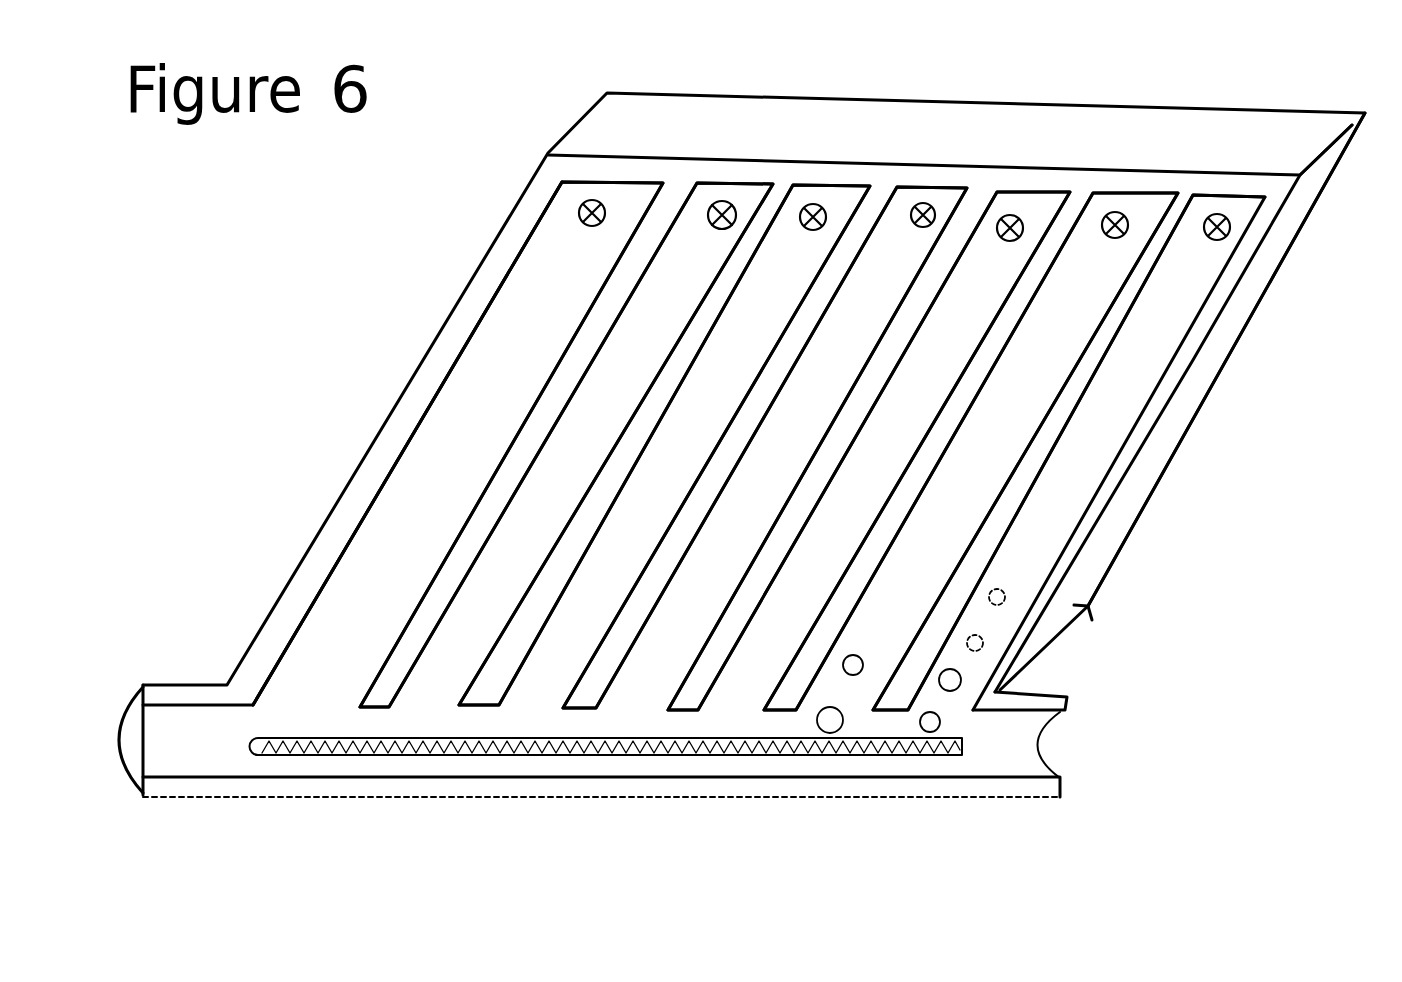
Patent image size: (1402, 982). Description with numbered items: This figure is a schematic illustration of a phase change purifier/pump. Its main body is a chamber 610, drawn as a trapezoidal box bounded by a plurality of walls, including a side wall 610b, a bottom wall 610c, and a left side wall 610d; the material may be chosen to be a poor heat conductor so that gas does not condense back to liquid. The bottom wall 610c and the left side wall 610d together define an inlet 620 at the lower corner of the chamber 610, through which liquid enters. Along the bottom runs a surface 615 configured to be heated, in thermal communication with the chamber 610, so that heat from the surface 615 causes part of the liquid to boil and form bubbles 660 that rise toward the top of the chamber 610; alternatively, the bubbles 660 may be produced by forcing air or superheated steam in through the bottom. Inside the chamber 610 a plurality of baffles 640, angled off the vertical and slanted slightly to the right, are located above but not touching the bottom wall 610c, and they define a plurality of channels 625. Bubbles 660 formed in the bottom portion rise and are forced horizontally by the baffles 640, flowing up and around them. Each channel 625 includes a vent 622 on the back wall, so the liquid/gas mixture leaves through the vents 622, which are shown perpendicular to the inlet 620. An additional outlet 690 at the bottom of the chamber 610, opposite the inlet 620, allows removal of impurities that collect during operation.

The chamber 610 is at (1232, 337).
The wall 610b is at (1147, 460).
The bottom wall 610c is at (490, 788).
The left side wall 610d is at (380, 450).
The surface 615 is at (755, 750).
The inlet 620 is at (215, 755).
The vents 622 is at (1222, 202).
The channels 625 is at (438, 680).
The baffles 640 is at (760, 390).
The bubbles 660 is at (1027, 562).
The outlet 690 is at (1007, 742).